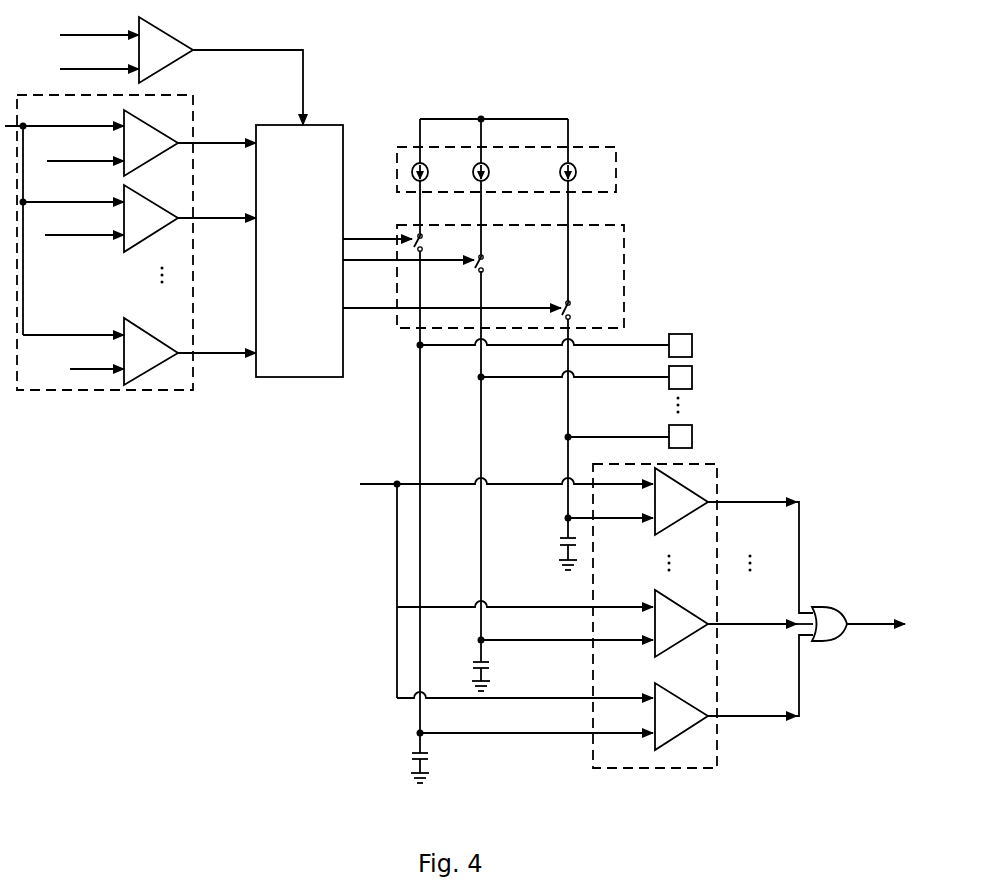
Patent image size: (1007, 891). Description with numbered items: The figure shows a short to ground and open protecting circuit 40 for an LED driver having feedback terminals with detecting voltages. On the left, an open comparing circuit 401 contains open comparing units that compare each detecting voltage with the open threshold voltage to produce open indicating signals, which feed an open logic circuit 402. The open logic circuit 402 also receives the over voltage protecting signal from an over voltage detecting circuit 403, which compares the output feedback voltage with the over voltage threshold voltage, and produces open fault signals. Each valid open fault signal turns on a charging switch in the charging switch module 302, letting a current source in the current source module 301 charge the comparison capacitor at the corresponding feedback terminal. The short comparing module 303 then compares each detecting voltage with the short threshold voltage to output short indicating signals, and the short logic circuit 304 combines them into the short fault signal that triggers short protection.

The short to ground and open protecting circuit 40 is at (747, 69).
The open comparing circuit 401 is at (188, 399).
The open logic circuit 402 is at (345, 381).
The over voltage detecting circuit 403 is at (171, 71).
The current source module 301 is at (615, 181).
The charging switch module 302 is at (628, 291).
The short comparing module 303 is at (720, 758).
The short logic circuit 304 is at (822, 644).